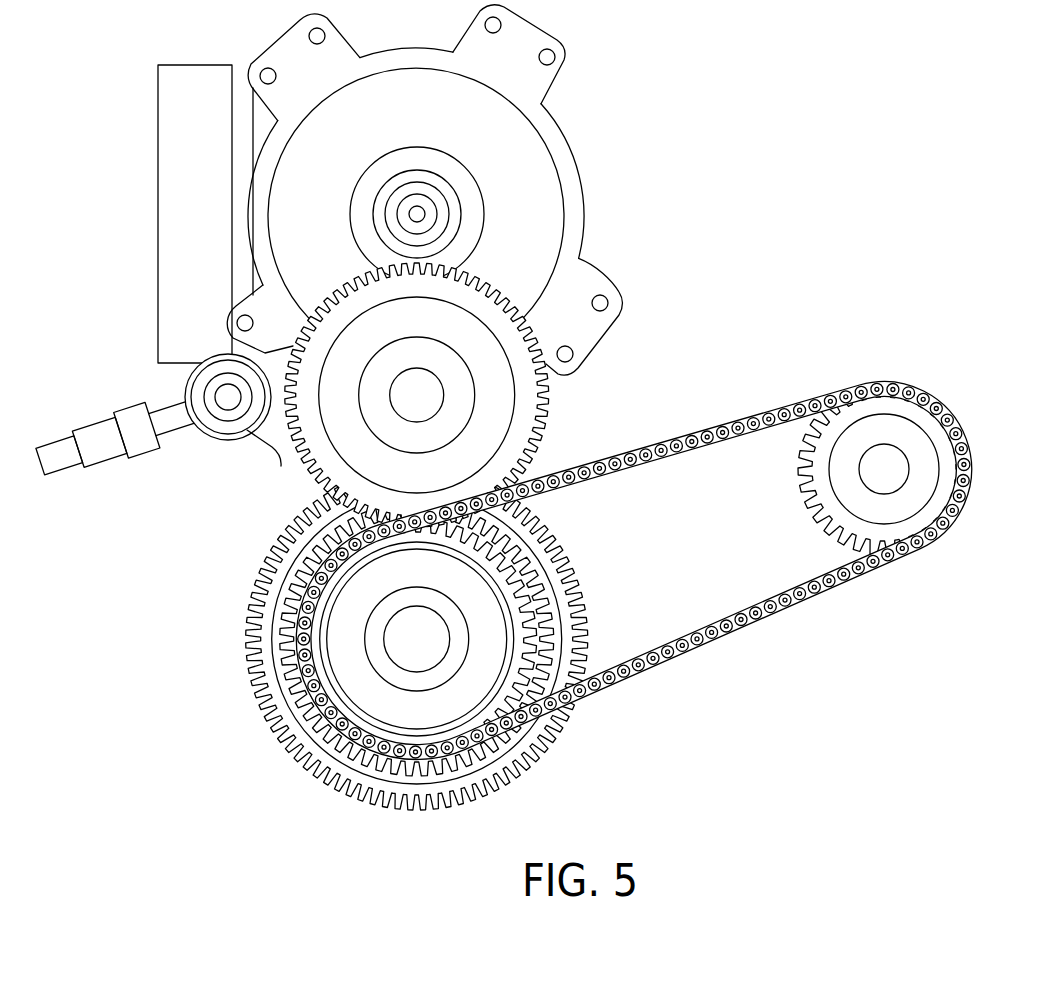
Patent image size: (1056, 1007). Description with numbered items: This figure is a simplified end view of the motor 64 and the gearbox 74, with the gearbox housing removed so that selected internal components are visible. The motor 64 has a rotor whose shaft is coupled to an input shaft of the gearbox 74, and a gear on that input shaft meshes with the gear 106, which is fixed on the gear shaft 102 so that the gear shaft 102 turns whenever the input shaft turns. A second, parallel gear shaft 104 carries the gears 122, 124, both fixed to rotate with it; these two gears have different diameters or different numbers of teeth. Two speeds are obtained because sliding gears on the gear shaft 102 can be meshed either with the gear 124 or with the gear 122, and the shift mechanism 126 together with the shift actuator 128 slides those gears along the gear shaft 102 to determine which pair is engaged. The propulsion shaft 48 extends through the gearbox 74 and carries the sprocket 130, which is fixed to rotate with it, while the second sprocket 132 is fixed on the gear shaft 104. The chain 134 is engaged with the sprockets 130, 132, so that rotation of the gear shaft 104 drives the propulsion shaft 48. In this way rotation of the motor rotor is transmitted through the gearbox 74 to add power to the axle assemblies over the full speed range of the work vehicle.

The motor 64 is at (430, 120).
The gearbox 74 is at (737, 254).
The gear 106 is at (552, 403).
The gear shaft 102 is at (437, 413).
The propulsion shaft 48 is at (910, 462).
The sprocket 130 is at (814, 500).
The chain 134 is at (742, 622).
The gear 124 is at (530, 577).
The gear 122 is at (285, 722).
The second sprocket 132 is at (425, 743).
The gear shaft 104 is at (372, 640).
The shift mechanism 126 is at (268, 448).
The shift actuator 128 is at (200, 435).